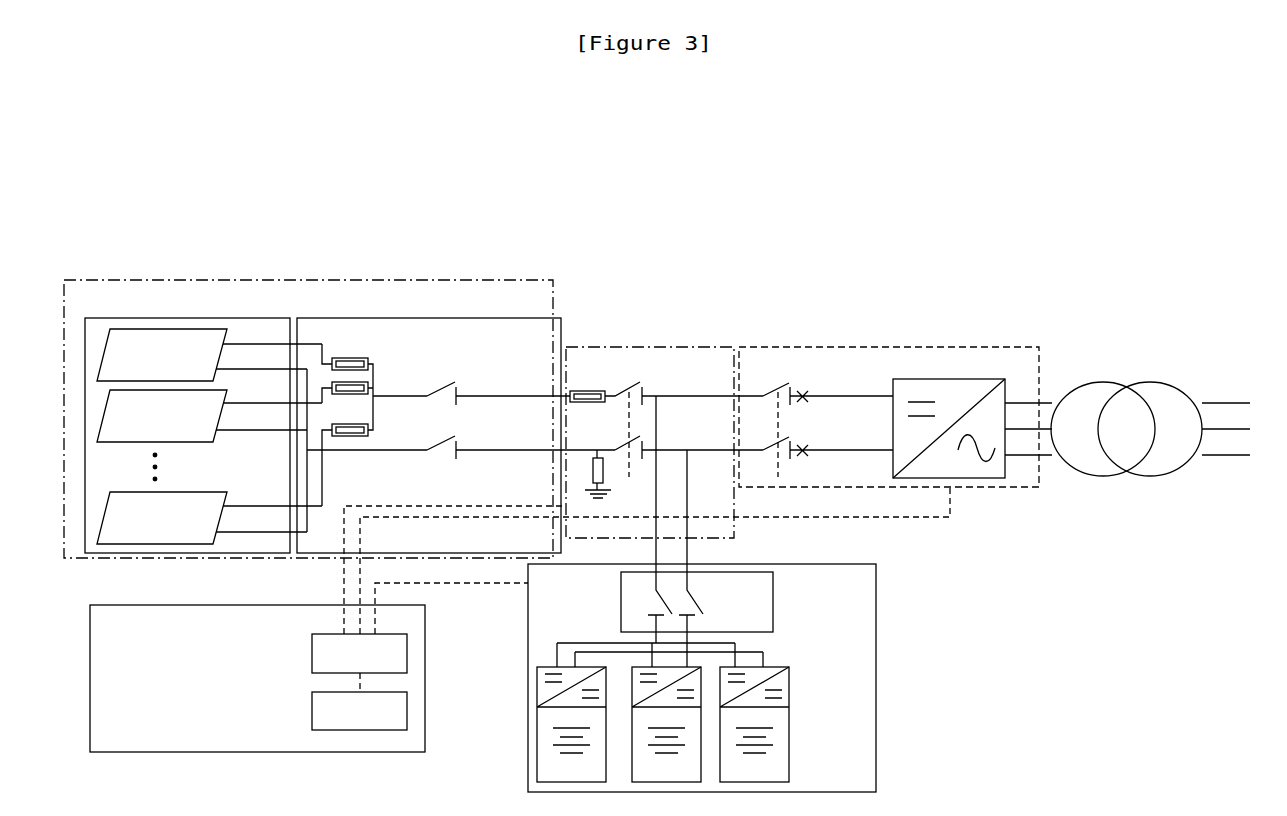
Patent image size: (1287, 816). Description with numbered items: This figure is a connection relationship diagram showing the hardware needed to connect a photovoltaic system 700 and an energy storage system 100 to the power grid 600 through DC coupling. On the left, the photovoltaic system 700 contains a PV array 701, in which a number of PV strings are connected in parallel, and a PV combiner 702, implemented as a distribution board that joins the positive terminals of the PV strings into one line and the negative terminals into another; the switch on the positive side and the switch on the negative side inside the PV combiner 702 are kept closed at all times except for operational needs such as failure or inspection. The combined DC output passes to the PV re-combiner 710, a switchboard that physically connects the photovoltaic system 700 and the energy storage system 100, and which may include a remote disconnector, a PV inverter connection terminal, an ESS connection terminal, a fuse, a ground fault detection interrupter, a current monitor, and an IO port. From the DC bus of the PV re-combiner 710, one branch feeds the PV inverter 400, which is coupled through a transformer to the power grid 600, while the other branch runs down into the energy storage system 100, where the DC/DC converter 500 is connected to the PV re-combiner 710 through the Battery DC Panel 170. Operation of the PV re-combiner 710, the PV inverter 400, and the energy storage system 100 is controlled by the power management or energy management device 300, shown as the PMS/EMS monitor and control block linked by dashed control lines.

The photovoltaic system 700 is at (409, 280).
The PV array 701 is at (113, 317).
The PV combiner 702 is at (527, 318).
The PV re-combiner 710 is at (732, 345).
The PV inverter 400 is at (1023, 345).
The power grid 600 is at (1228, 378).
The power management control device or energy management device (PMS/EMS) 300 is at (338, 755).
The energy storage system 100 is at (876, 736).
The Battery DC Panel (BDCP) 170 is at (838, 603).
The DC/DC converter 500 is at (846, 686).